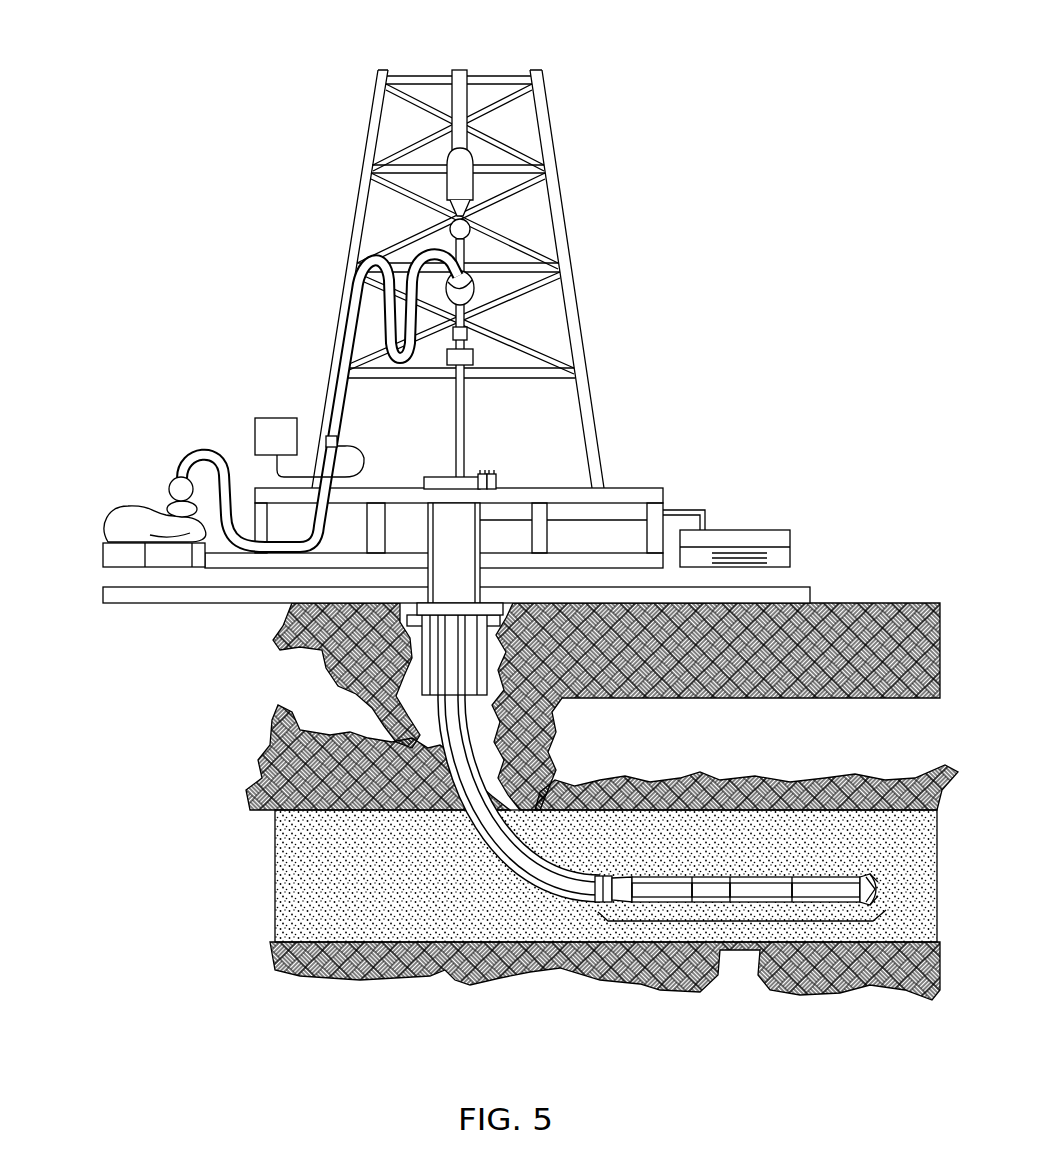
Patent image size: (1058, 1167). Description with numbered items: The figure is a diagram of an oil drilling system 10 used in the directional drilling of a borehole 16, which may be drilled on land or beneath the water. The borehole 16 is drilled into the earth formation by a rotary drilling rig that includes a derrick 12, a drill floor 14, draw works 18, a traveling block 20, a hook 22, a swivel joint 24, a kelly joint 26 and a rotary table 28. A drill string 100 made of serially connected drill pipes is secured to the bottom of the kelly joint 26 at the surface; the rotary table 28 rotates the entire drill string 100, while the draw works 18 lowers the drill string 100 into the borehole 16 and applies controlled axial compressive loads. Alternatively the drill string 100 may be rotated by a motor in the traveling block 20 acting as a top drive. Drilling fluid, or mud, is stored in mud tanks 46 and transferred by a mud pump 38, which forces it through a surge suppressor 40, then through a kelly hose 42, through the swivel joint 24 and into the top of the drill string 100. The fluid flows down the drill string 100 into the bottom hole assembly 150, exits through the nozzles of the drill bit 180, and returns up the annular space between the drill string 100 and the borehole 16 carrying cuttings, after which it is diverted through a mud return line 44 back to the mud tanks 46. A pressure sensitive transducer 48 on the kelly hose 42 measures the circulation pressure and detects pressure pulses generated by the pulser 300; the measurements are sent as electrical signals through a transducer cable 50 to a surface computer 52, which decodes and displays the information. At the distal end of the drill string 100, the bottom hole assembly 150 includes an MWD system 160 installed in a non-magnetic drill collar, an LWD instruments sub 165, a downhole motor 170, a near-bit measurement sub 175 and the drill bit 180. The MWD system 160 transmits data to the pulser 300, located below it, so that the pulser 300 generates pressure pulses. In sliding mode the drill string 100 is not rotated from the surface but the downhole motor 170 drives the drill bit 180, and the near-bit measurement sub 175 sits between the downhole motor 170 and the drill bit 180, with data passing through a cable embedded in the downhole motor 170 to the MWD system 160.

The oil drilling system 10 is at (677, 68).
The derrick 12 is at (558, 167).
The drill floor 14 is at (618, 488).
The borehole 16 is at (428, 740).
The draw works 18 is at (462, 96).
The traveling block 20 is at (460, 183).
The hook 22 is at (450, 226).
The swivel joint 24 is at (482, 272).
The kelly joint 26 is at (467, 415).
The rotary table 28 is at (497, 478).
The mud pump 38 is at (103, 520).
The surge suppressor 40 is at (176, 480).
The kelly hose 42 is at (348, 334).
The mud return line 44 is at (695, 508).
The mud tanks 46 is at (722, 548).
The pressure sensitive transducer 48 is at (331, 436).
The transducer cable 50 is at (362, 448).
The surface computer 52 is at (270, 418).
The drill string 100 is at (476, 820).
The bottom hole assembly 150 is at (740, 925).
The MWD system 160 is at (655, 887).
The LWD instruments sub 165 is at (708, 890).
The downhole motor 170 is at (765, 890).
The near-bit measurement sub 175 is at (810, 890).
The drill bit 180 is at (868, 877).
The pulser 300 is at (700, 883).